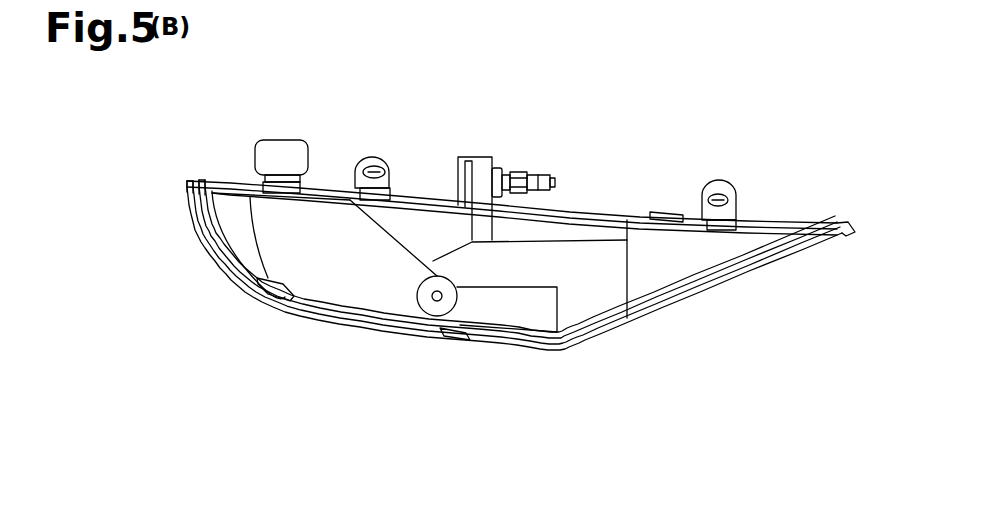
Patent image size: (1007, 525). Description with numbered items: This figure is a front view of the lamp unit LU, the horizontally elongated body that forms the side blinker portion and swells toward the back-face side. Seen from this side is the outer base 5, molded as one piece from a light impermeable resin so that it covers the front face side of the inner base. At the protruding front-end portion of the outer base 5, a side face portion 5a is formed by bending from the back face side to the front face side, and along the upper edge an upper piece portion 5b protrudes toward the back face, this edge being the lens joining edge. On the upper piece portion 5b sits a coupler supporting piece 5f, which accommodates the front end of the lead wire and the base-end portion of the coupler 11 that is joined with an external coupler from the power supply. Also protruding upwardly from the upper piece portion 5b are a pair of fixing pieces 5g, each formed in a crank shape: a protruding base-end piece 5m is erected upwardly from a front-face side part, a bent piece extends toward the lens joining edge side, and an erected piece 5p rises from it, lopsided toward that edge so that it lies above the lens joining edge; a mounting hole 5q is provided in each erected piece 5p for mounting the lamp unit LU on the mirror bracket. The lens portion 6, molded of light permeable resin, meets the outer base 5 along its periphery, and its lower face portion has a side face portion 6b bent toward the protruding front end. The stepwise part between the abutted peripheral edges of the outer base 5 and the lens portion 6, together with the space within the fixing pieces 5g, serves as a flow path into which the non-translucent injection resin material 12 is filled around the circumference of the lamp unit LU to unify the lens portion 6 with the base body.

The lamp unit LU is at (344, 102).
The outer base 5 is at (748, 245).
The side face portion 5a is at (233, 200).
The upper piece portion 5b is at (587, 210).
The coupler supporting piece 5f is at (482, 170).
The fixing piece 5g is at (382, 152).
The protruding base-end piece 5m is at (380, 198).
The erected piece 5p is at (362, 172).
The mounting hole 5q is at (390, 174).
The lens portion 6 is at (501, 364).
The side face portion 6b is at (187, 193).
The coupler 11 is at (530, 173).
The injection resin material 12 is at (683, 220).